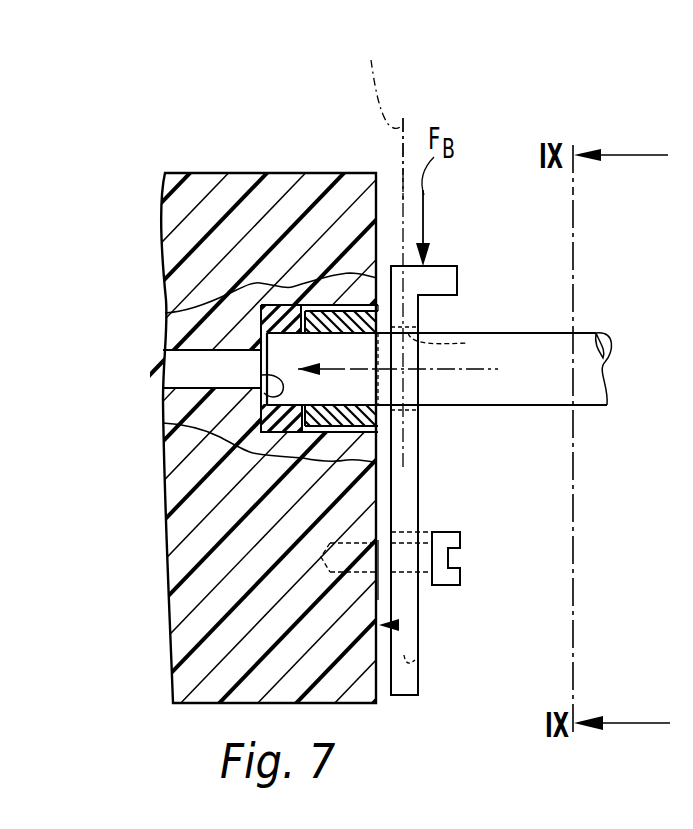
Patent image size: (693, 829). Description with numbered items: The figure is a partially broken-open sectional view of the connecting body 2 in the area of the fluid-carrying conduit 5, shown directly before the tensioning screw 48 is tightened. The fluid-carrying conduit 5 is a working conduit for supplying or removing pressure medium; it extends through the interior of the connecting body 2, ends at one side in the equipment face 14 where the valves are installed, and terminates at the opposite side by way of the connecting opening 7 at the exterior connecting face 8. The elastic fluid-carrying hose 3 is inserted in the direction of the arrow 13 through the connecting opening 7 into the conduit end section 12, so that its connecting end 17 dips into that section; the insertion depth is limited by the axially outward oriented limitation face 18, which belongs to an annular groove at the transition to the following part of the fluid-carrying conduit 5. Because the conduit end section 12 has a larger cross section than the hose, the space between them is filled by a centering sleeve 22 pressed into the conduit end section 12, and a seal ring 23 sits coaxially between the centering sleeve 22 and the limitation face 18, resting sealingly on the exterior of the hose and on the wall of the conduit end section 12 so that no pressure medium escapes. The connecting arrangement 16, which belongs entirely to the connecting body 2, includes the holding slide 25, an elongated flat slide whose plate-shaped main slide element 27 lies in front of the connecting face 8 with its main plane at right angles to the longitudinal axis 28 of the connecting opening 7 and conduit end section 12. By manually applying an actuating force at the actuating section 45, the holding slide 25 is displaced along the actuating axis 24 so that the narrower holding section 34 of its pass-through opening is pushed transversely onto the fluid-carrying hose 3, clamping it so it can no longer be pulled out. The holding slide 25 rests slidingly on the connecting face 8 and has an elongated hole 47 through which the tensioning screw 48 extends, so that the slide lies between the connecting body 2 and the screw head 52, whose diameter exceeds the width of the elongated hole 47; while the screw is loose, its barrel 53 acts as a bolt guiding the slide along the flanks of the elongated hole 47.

The connecting body 2 is at (183, 636).
The fluid-carrying hose 3 is at (542, 340).
The fluid-carrying conduit 5 is at (178, 358).
The connecting opening 7 is at (378, 304).
The connecting face 8 is at (397, 625).
The conduit end section 12 is at (377, 418).
The arrow 13 is at (327, 366).
The equipment face 14 is at (220, 166).
The connecting arrangement 16 is at (447, 256).
The connecting end 17 is at (275, 348).
The limitation face 18 is at (262, 375).
The centering sleeve 22 is at (320, 423).
The seal ring 23 is at (277, 425).
The actuating axis 24 is at (384, 78).
The holding slide 25 is at (410, 310).
The main slide element 27 is at (420, 495).
The longitudinal axis 28 is at (497, 369).
The holding section 34 is at (450, 351).
The actuating section 45 is at (460, 278).
The elongated hole 47 is at (415, 660).
The tensioning screw 48 is at (470, 558).
The screw head 52 is at (460, 540).
The barrel 53 is at (383, 565).